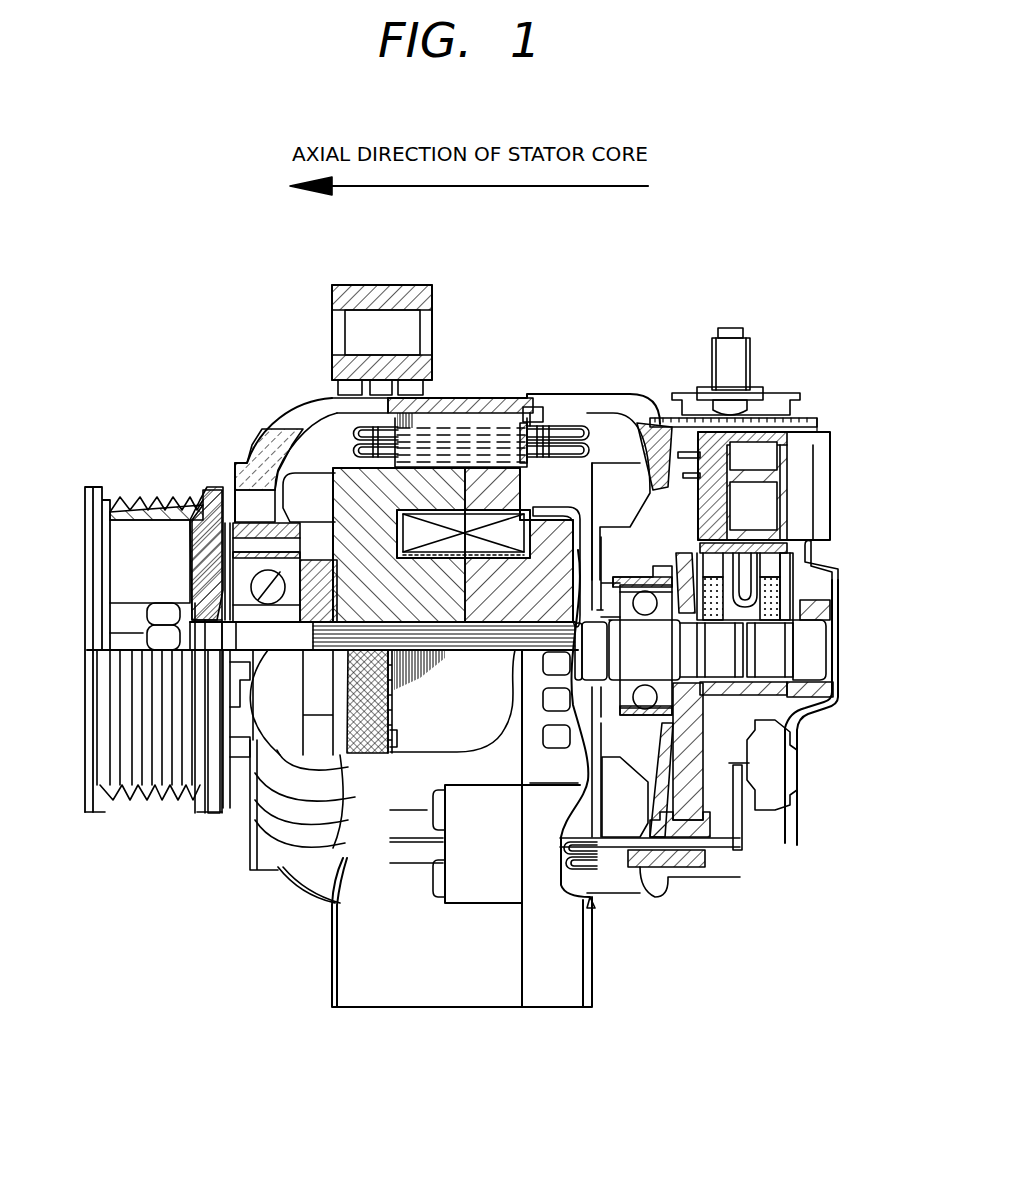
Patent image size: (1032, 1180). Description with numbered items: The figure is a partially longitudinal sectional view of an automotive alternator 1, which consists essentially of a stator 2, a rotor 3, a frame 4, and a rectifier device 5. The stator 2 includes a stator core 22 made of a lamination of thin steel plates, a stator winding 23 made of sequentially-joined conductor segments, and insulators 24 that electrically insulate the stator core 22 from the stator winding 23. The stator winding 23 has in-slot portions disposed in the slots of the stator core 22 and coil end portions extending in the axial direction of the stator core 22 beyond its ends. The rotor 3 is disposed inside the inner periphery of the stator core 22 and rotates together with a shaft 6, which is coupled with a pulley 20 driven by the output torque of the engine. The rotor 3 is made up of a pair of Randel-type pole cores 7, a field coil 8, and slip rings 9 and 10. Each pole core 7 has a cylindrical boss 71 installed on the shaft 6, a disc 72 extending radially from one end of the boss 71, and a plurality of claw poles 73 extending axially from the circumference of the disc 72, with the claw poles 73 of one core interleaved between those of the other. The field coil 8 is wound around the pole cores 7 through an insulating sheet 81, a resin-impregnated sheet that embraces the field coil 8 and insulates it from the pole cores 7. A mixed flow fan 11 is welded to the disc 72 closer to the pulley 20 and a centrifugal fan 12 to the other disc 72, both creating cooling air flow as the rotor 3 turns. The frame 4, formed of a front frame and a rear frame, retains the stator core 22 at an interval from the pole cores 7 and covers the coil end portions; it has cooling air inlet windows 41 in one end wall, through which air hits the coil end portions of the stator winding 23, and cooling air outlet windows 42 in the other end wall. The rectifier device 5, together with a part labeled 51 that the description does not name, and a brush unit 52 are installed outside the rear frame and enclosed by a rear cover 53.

The alternator 1 is at (665, 306).
The stator 2 is at (596, 414).
The rotor 3 is at (305, 480).
The frame 4 is at (350, 983).
The rectifier device 5 is at (762, 757).
The shaft 6 is at (243, 612).
The Randel-type pole cores 7 is at (618, 500).
The field coil 8 is at (490, 522).
The slip ring 9 is at (720, 640).
The slip ring 10 is at (777, 660).
The mixed flow fan 11 is at (250, 503).
The centrifugal fan 12 is at (703, 500).
The pulley 20 is at (150, 487).
The stator core 22 is at (462, 418).
The stator winding 23 is at (559, 412).
The insulators 24 is at (532, 416).
The cooling air inlet windows 41 is at (330, 397).
The cooling air outlet windows 42 is at (228, 540).
The rectifier element 51 is at (808, 523).
The brush unit 52 is at (813, 557).
The rear cover 53 is at (840, 700).
The cylindrical boss 71 is at (333, 848).
The disc 72 is at (215, 640).
The claw poles 73 is at (468, 478).
The insulating sheet 81 is at (305, 458).